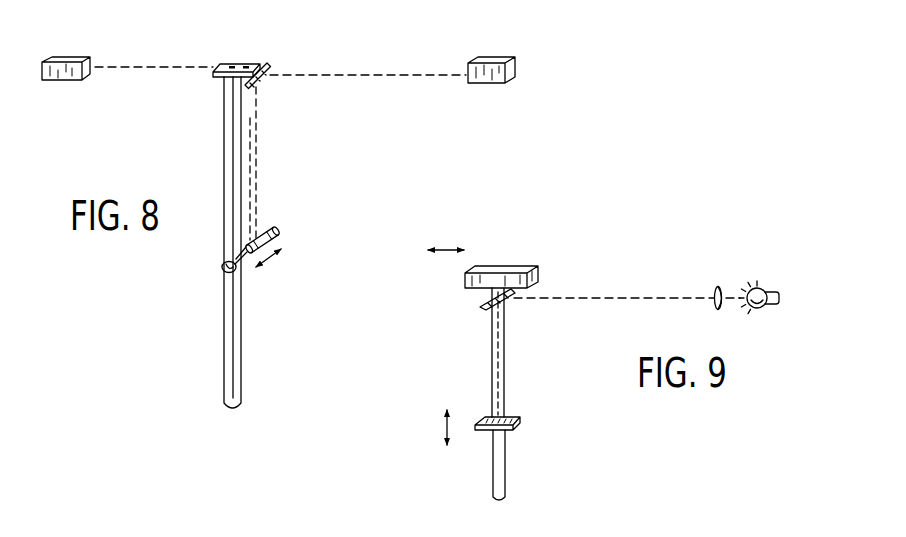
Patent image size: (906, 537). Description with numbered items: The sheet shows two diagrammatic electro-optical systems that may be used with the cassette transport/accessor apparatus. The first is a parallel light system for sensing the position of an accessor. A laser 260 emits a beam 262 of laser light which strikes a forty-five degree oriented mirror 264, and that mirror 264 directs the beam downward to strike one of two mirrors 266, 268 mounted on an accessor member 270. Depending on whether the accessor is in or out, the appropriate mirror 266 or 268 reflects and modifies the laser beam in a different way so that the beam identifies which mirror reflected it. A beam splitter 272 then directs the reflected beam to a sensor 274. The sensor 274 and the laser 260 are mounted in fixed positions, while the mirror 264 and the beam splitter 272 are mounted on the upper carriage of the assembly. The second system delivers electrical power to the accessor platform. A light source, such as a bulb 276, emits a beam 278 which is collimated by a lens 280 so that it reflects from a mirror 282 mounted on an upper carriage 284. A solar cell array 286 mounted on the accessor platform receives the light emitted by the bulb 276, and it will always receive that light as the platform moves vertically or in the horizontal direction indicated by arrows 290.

In FIG. 8, the laser 260 is at (488, 80).
In FIG. 8, the beam 262 is at (360, 75).
In FIG. 8, the mirror 264 is at (257, 85).
In FIG. 8, the mirror 266 is at (272, 232).
In FIG. 8, the mirror 268 is at (243, 270).
In FIG. 8, the accessor member 270 is at (284, 250).
In FIG. 8, the beam splitter 272 is at (262, 63).
In FIG. 8, the sensor 274 is at (77, 56).
In FIG. 9, the bulb 276 is at (760, 287).
In FIG. 9, the beam 278 is at (607, 298).
In FIG. 9, the lens 280 is at (717, 287).
In FIG. 9, the mirror 282 is at (511, 297).
In FIG. 9, the upper carriage 284 is at (505, 270).
In FIG. 9, the solar cell array 286 is at (518, 420).
In FIG. 9, the arrows 290 is at (448, 246).